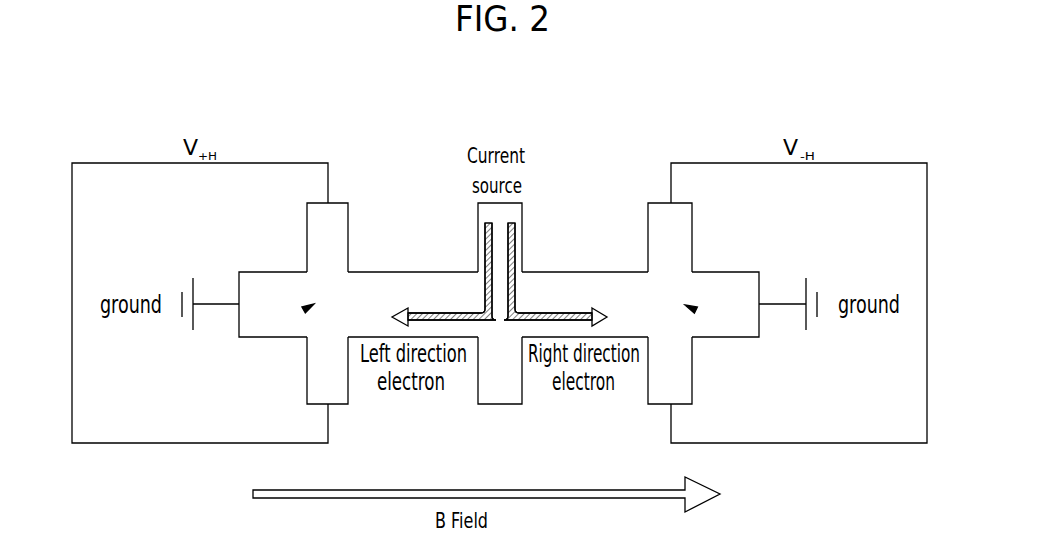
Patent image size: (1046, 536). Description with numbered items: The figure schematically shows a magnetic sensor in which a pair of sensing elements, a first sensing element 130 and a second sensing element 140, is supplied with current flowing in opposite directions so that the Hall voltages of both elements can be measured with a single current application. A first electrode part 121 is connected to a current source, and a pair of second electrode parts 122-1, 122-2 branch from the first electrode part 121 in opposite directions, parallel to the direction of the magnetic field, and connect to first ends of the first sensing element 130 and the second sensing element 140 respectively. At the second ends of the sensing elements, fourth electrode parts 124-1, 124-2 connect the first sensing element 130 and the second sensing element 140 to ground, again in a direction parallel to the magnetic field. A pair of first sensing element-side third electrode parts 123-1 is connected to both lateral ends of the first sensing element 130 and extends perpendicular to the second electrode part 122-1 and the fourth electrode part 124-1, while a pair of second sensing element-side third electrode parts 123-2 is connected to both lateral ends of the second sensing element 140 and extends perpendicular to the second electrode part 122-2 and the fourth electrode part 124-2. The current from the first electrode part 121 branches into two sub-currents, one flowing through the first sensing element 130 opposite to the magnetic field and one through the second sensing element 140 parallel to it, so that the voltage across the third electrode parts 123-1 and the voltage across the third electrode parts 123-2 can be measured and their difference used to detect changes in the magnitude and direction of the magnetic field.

The first electrode part 121 is at (522, 213).
The second electrode part 122-1 is at (415, 283).
The second electrode part 122-2 is at (580, 283).
The first sensing element-side third electrode parts 123-1 is at (338, 220).
The second sensing element-side third electrode parts 123-2 is at (683, 212).
The fourth electrode part 124-1 is at (265, 283).
The fourth electrode part 124-2 is at (735, 283).
The first sensing element 130 is at (302, 311).
The second sensing element 140 is at (702, 313).